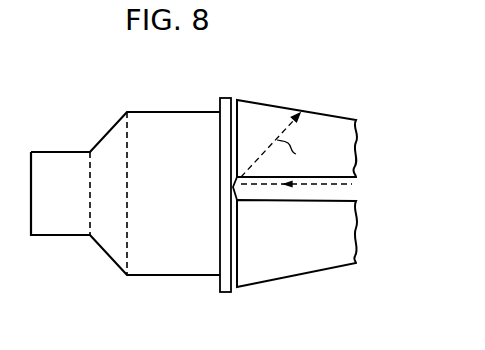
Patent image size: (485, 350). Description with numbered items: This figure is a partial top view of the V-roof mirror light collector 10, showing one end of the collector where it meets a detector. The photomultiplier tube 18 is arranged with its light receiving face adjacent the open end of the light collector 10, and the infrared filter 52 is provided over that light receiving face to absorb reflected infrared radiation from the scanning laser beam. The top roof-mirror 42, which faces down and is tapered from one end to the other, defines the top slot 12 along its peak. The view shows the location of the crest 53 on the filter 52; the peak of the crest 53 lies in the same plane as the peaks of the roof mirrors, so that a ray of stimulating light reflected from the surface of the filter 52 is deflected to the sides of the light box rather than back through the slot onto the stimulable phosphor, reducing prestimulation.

The V-roof mirror light collector 10 is at (345, 98).
The top slot 12 is at (346, 184).
The photomultiplier tube 18 is at (171, 123).
The top roof-mirror 42 is at (278, 108).
The infrared filter 52 is at (228, 97).
The crest 53 is at (242, 192).